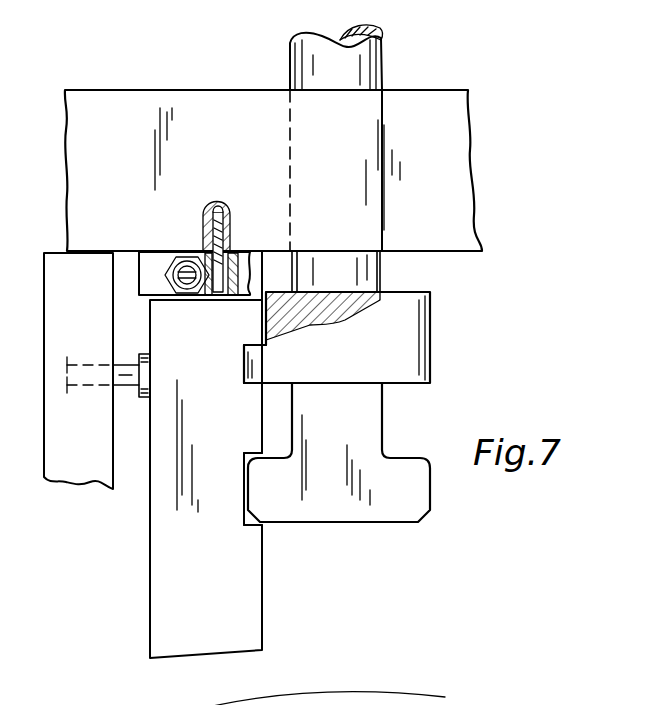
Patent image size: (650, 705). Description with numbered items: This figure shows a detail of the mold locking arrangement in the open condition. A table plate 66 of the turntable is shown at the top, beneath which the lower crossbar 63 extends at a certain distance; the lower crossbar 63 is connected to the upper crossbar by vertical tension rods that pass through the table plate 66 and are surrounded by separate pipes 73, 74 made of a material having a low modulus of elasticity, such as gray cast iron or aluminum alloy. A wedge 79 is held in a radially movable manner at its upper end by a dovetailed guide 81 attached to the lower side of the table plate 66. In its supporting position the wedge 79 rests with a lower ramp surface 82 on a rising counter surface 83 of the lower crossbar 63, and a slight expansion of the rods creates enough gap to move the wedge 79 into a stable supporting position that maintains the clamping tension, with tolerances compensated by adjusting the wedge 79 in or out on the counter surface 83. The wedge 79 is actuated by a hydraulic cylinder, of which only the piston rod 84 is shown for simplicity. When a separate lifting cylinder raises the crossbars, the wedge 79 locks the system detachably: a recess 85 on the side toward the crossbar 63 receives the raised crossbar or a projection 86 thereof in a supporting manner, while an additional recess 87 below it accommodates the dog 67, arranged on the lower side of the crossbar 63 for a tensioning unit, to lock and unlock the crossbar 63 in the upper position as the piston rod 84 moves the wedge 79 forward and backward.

The lower crossbar 63 is at (337, 360).
The table plate 66 is at (445, 157).
The dog 67 is at (395, 500).
The pipe 73 is at (393, 158).
The pipe 74 is at (367, 71).
The wedge 79 is at (250, 629).
The dovetailed guide 81 is at (153, 268).
The lower ramp surface 82 is at (187, 477).
The rising counter surface 83 is at (340, 304).
The piston rod 84 is at (128, 382).
The recess 85 is at (258, 340).
The projection 86 is at (258, 368).
The additional recess 87 is at (242, 497).